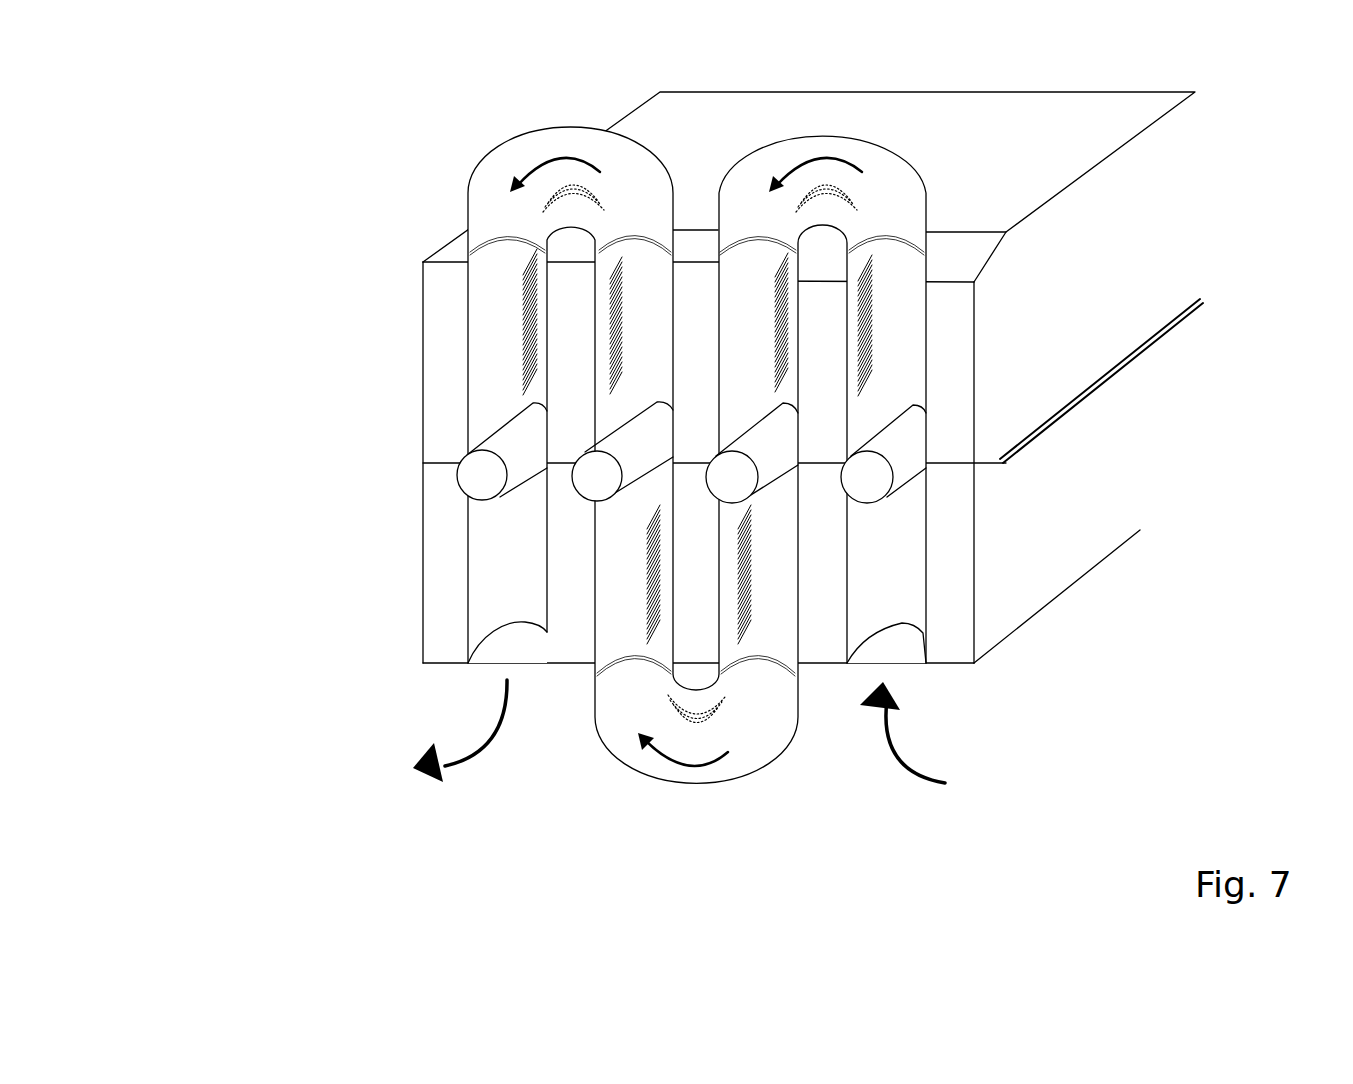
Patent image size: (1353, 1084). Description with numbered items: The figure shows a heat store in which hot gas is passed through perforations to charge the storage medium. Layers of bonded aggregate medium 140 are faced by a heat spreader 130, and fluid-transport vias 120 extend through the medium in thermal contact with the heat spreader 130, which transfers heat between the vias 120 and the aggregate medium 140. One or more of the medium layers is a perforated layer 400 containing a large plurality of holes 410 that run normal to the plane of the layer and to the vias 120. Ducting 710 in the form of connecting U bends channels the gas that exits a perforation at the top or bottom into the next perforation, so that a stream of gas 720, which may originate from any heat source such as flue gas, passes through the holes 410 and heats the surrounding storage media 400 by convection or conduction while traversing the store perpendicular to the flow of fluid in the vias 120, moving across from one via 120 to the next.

The fluid-transport vias 120 is at (870, 478).
The heat spreader 130 is at (1138, 358).
The bonded aggregate medium 140 is at (1075, 319).
The perforated layer 400 is at (432, 277).
The holes 410 is at (892, 326).
The ducting 710 is at (732, 162).
The stream of gas 720 is at (689, 731).